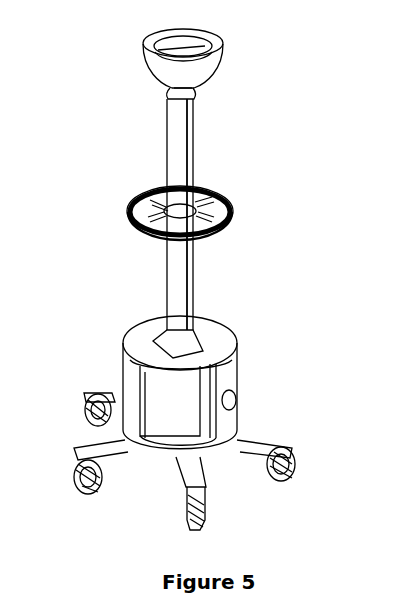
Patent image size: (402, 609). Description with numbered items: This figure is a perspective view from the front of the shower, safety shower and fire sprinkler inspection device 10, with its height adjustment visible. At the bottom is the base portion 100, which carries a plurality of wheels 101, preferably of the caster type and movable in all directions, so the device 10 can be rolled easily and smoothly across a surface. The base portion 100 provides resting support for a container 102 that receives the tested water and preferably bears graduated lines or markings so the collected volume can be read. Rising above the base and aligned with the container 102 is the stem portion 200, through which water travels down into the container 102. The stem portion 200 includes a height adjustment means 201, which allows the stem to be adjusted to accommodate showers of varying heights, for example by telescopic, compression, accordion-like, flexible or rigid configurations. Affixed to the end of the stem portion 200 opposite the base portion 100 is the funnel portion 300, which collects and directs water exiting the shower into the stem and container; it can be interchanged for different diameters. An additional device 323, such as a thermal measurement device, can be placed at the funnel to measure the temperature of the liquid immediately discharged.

The device 10 is at (98, 134).
The funnel portion 300 is at (222, 38).
The additional device 323 is at (197, 82).
The stem portion 200 is at (180, 284).
The height adjustment means 201 is at (190, 203).
The container 102 is at (212, 396).
The base portion 100 is at (227, 422).
The wheels 101 is at (303, 467).